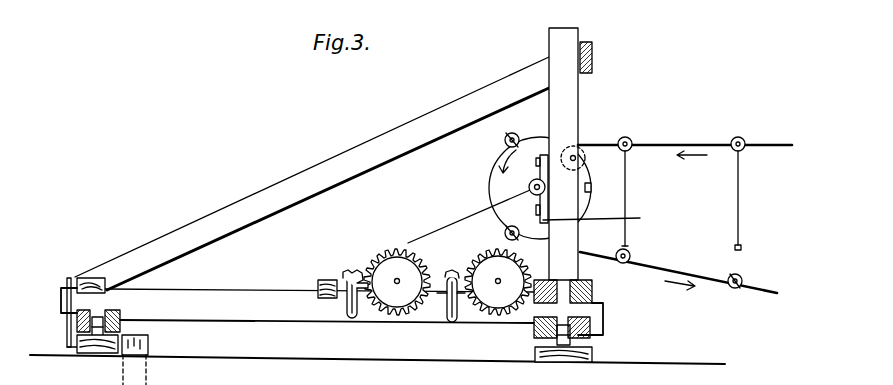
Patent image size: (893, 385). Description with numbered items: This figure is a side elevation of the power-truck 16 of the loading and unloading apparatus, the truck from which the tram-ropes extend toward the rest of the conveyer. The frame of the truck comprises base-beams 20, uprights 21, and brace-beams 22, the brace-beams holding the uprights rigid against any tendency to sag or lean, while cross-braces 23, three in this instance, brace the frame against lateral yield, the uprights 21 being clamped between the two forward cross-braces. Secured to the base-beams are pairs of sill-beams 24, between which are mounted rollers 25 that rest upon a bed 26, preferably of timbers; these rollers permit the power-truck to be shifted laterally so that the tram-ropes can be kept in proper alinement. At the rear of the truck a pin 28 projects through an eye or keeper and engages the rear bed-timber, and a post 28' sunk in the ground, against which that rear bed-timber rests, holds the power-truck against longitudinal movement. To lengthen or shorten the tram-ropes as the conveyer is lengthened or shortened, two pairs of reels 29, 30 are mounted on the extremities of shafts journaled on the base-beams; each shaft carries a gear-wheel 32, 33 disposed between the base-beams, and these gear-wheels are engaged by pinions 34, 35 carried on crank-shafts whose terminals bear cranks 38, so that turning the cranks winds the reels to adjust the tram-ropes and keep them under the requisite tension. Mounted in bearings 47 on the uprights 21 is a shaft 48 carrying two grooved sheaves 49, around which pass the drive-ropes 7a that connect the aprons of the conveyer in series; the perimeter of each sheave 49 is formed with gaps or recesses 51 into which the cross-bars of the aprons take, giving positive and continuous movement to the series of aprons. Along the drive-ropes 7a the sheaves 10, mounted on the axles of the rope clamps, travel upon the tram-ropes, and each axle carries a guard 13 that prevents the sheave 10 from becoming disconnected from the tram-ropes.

The sheave 10 is at (750, 142).
The guard 13 is at (741, 137).
The drive-rope 7a is at (653, 151).
The power-truck 16 is at (312, 167).
The brace-beam 22 is at (328, 189).
The base-beam 20 is at (319, 306).
The upright 21 is at (570, 154).
The cross-brace 23 is at (93, 279).
The sill-beam 24 is at (119, 322).
The roller 25 is at (98, 313).
The bed 26 is at (100, 353).
The pin 28 is at (55, 297).
The post 28' is at (156, 357).
The reel 29 is at (498, 282).
The reel 30 is at (397, 282).
The gear-wheel 32 is at (497, 250).
The gear-wheel 33 is at (392, 250).
The pinion 34 is at (450, 276).
The pinion 35 is at (345, 270).
The crank 38 is at (348, 312).
The bearing 47 is at (605, 223).
The shaft 48 is at (528, 187).
The grooved sheave 49 is at (498, 158).
The gap or recess 51 is at (591, 187).